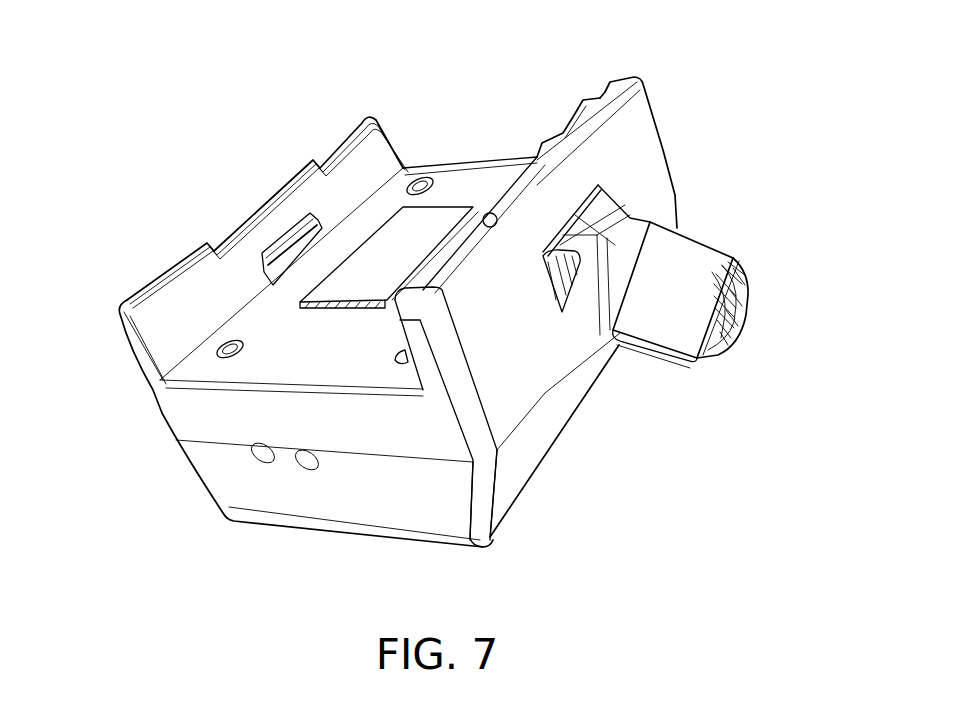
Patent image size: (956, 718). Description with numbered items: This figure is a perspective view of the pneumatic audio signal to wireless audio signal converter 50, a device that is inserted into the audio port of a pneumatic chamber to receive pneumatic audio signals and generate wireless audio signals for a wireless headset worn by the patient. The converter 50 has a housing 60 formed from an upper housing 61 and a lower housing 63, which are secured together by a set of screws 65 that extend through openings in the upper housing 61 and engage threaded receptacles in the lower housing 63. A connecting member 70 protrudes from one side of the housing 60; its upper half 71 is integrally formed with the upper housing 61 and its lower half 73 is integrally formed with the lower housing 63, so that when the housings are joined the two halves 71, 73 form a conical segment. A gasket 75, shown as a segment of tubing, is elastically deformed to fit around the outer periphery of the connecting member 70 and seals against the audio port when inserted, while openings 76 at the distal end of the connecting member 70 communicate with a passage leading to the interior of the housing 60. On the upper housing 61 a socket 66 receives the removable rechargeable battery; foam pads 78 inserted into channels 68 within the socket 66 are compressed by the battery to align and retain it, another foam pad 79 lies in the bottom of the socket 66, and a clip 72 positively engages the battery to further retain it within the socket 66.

The pneumatic audio signal to wireless audio signal converter 50 is at (125, 207).
The housing 60 is at (161, 415).
The upper housing 61 is at (527, 388).
The lower housing 63 is at (539, 464).
The screws 65 is at (432, 187).
The socket 66 is at (385, 195).
The channels 68 is at (606, 92).
The connecting member 70 is at (691, 217).
The upper half of the connecting member 71 is at (738, 260).
The clip 72 is at (283, 240).
The lower half of the connecting member 73 is at (716, 356).
The gasket 75 is at (674, 310).
The openings 76 is at (798, 275).
The foam pads 78 is at (574, 117).
The foam pad 79 is at (414, 259).